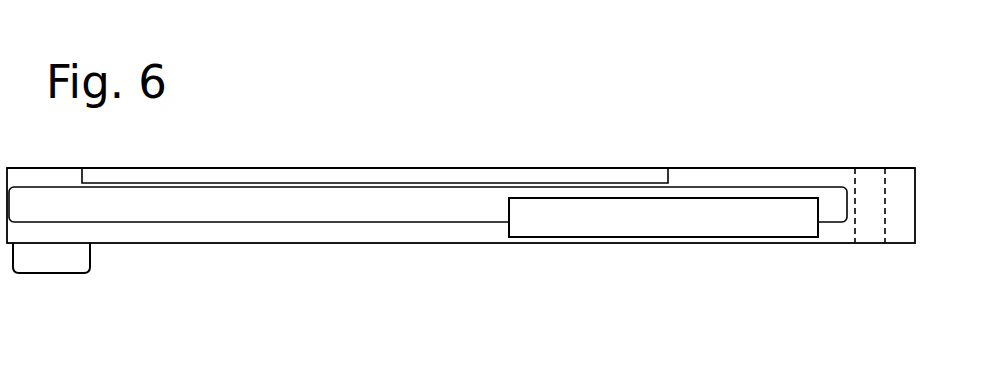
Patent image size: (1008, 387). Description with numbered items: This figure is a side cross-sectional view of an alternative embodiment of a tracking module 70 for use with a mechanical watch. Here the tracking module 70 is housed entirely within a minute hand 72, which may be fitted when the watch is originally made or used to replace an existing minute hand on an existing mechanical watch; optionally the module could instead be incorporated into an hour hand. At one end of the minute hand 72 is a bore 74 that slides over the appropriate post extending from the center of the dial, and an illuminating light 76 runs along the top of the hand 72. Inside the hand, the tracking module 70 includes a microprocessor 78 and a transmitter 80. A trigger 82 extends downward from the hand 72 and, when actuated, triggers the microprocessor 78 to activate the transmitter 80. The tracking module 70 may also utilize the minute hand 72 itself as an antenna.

The tracking module 70 is at (275, 237).
The minute hand 72 is at (735, 167).
The bore 74 is at (870, 233).
The illuminating light 76 is at (330, 178).
The microprocessor 78 is at (663, 217).
The transmitter 80 is at (428, 204).
The trigger 82 is at (68, 262).